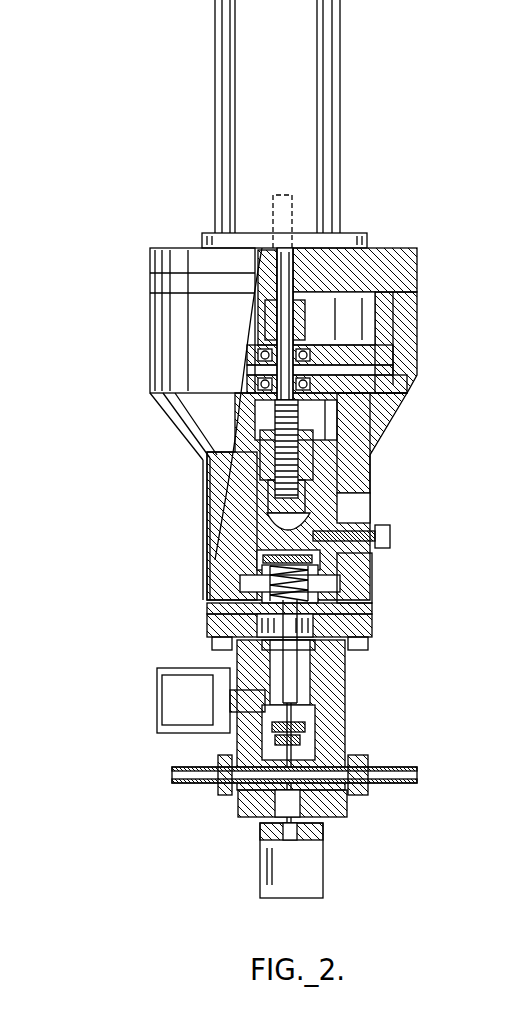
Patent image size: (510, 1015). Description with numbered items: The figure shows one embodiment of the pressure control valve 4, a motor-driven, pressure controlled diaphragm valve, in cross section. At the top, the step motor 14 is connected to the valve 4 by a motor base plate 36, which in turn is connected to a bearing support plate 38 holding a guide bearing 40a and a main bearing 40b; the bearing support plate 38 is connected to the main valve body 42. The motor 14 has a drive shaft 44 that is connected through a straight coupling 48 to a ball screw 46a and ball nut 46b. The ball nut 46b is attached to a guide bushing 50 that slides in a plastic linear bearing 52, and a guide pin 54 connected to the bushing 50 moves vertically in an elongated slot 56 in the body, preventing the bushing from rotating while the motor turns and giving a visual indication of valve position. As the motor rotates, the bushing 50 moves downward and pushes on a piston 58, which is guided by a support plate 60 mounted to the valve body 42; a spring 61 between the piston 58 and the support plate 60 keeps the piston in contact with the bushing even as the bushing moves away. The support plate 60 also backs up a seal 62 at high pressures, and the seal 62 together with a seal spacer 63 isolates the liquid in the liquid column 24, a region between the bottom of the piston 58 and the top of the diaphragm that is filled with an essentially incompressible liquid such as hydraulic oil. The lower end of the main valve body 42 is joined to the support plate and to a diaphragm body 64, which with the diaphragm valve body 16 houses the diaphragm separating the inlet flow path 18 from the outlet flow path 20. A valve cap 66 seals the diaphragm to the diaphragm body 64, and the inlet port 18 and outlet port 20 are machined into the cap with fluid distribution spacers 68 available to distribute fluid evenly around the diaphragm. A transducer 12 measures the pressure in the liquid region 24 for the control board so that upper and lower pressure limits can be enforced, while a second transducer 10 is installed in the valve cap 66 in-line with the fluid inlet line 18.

The pressure control valve 4 is at (79, 286).
The transducer 10 is at (323, 862).
The transducer 12 is at (157, 692).
The step motor 14 is at (343, 118).
The diaphragm valve body 16 is at (347, 682).
The inlet flow path 18 is at (290, 727).
The outlet flow path 20 is at (408, 759).
The liquid column 24 is at (267, 667).
The motor base plate 36 is at (383, 247).
The bearing support plate 38 is at (418, 278).
The guide bearing 40a is at (380, 349).
The main bearing 40b is at (342, 385).
The main valve body 42 is at (418, 317).
The drive shaft 44 is at (270, 258).
The ball screw 46a is at (340, 432).
The ball nut 46b is at (337, 437).
The straight coupling 48 is at (305, 317).
The guide bushing 50 is at (230, 537).
The plastic linear bearing 52 is at (338, 468).
The guide pin 54 is at (391, 534).
The elongated slot 56 is at (371, 508).
The piston 58 is at (261, 559).
The support plate 60 is at (372, 604).
The spring 61 is at (258, 581).
The seal 62 is at (300, 645).
The seal spacer 63 is at (247, 627).
The diaphragm body 64 is at (375, 623).
The valve cap 66 is at (247, 820).
The fluid distribution spacers 68 is at (305, 737).